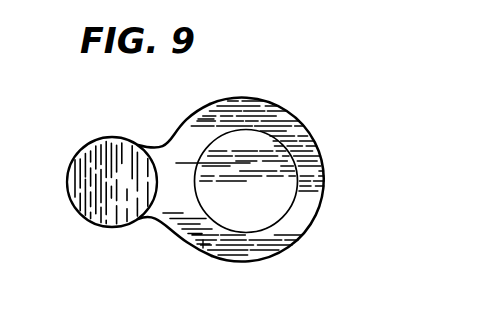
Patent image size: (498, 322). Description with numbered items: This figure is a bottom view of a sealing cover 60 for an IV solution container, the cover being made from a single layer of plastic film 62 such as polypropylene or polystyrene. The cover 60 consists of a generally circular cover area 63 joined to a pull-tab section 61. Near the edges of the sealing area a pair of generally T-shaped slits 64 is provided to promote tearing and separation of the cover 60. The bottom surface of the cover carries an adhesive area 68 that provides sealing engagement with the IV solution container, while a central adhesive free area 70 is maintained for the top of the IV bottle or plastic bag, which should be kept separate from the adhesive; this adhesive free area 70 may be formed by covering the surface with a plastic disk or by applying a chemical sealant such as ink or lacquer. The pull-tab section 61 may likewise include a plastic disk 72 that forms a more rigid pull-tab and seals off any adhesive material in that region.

The sealing cover 60 is at (195, 161).
The pull-tab section 61 is at (93, 194).
The single layer of plastic film 62 is at (308, 129).
The generally circular cover area 63 is at (258, 296).
The generally T-shaped slits 64 is at (208, 119).
The adhesive area 68 is at (295, 222).
The adhesive free area 70 is at (251, 141).
The plastic disk 72 is at (83, 212).